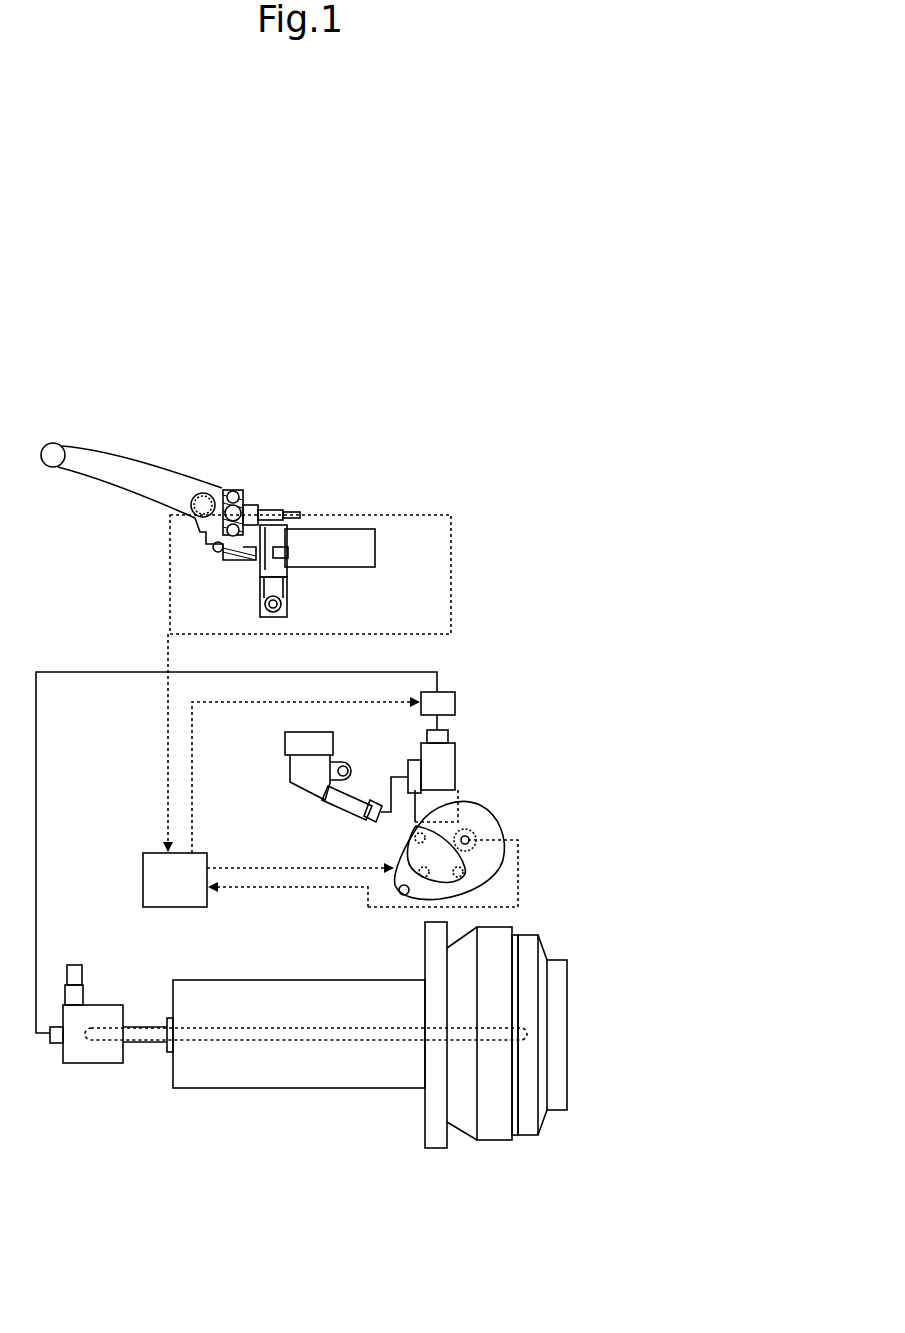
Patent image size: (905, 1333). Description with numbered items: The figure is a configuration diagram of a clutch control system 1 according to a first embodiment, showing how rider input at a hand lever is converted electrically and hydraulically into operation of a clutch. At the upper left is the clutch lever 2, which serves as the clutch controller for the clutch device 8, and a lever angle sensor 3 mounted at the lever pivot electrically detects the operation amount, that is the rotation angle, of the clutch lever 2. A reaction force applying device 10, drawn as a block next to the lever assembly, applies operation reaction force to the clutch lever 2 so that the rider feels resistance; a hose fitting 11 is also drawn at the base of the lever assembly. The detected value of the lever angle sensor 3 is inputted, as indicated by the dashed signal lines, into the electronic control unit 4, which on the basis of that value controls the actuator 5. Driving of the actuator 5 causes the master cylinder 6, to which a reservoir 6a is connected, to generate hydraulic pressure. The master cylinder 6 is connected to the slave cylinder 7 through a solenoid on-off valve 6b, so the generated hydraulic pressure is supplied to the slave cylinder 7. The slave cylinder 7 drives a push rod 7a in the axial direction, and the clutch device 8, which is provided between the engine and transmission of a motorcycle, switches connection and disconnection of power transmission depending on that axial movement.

The clutch control system 1 is at (554, 460).
The clutch lever 2 is at (152, 492).
The lever angle sensor 3 is at (253, 505).
The electronic control unit 4 is at (142, 866).
The actuator 5 is at (490, 810).
The master cylinder 6 is at (456, 768).
The reservoir 6a is at (290, 769).
The solenoid on-off valve 6b is at (456, 703).
The slave cylinder 7 is at (88, 1065).
The push rod 7a is at (242, 1045).
The clutch device 8 is at (496, 1145).
The reaction force applying device 10 is at (341, 525).
The hose joint 11 is at (258, 587).